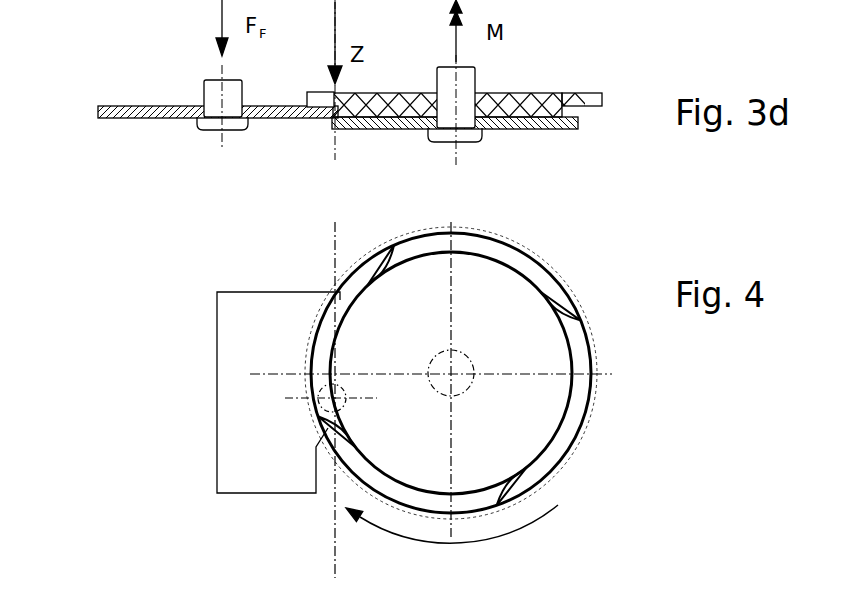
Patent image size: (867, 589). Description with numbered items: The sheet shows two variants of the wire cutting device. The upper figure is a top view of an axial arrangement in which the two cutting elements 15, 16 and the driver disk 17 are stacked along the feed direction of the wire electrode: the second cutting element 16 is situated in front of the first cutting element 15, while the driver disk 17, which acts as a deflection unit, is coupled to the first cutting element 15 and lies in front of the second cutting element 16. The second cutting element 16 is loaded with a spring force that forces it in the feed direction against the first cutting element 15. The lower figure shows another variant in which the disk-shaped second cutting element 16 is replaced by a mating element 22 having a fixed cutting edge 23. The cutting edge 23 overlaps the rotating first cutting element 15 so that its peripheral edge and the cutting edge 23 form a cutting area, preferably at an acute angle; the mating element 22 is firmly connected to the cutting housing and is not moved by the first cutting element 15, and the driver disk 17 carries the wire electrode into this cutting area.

In FIG. 3D, the first cutting element 15 is at (545, 128).
In FIG. 3D, the second cutting element 16 is at (98, 118).
In FIG. 3D, the driver disk 17 is at (531, 102).
In FIG. 4, the mating element 22 is at (228, 465).
In FIG. 4, the cutting edge 23 is at (322, 470).